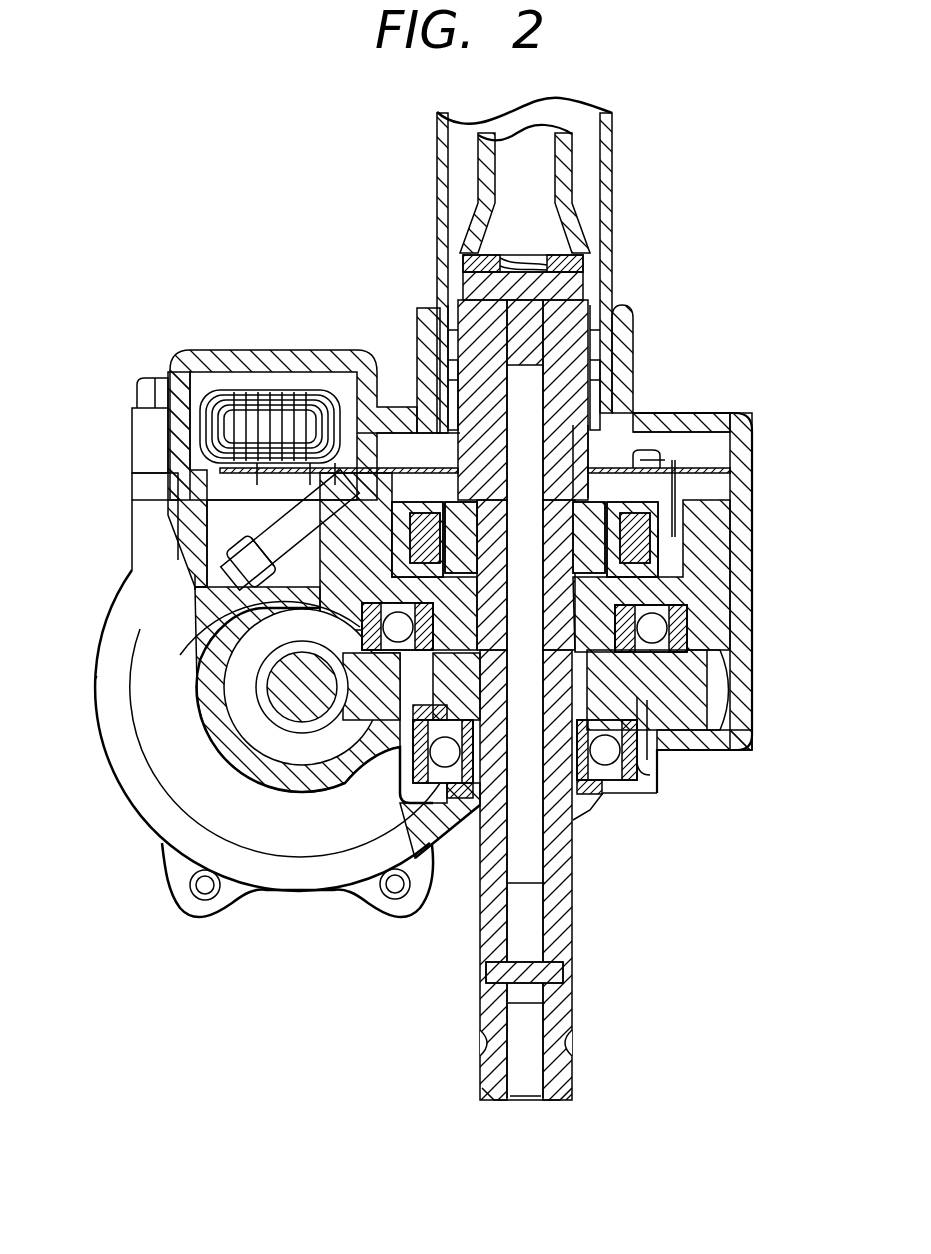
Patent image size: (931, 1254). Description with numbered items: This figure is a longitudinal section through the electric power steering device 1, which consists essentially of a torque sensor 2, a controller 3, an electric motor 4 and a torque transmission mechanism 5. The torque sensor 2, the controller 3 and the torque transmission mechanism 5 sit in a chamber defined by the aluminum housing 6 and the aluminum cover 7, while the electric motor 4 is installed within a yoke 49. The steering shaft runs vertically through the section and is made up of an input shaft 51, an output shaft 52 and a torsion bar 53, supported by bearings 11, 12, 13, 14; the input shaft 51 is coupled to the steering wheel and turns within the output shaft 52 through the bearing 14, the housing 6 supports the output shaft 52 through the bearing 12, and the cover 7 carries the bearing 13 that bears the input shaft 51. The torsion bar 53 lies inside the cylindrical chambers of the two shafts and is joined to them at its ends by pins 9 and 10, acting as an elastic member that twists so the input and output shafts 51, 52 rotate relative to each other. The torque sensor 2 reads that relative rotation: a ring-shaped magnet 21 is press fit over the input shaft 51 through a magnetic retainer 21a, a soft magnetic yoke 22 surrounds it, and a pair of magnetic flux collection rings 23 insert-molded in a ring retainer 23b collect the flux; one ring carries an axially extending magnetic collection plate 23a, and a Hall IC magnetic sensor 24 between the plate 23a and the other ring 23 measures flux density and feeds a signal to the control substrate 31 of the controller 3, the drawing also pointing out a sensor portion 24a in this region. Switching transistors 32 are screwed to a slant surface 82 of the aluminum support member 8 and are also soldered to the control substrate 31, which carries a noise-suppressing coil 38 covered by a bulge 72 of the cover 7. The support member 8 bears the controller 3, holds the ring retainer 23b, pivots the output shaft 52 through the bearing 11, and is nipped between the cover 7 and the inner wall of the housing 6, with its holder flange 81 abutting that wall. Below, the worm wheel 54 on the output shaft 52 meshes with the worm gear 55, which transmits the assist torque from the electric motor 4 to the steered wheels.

The electric power steering device 1 is at (691, 985).
The torque sensor 2 is at (667, 550).
The controller 3 is at (710, 458).
The electric motor 4 is at (140, 833).
The torque transmission mechanism 5 is at (753, 747).
The housing 6 is at (183, 527).
The cover 7 is at (137, 385).
The support member 8 is at (235, 488).
The pin 9 is at (437, 290).
The pin 10 is at (510, 975).
The bearing 11 is at (240, 640).
The bearing 12 is at (657, 783).
The bearing 13 is at (617, 350).
The bearing 14 is at (637, 717).
The magnet 21 is at (627, 520).
The magnetic retainer 21a is at (600, 505).
The magnetic yoke 22 is at (645, 525).
The magnetic flux collection rings 23 is at (410, 505).
The magnetic collection plate 23a is at (640, 560).
The ring retainer 23b is at (400, 400).
The magnetic sensor 24 is at (662, 533).
The holder flange 24a is at (680, 493).
The control substrate 31 is at (725, 440).
The switching transistors 32 is at (287, 513).
The coil 38 is at (226, 392).
The yoke 49 is at (187, 847).
The input shaft 51 is at (425, 322).
The output shaft 52 is at (563, 937).
The torsion bar 53 is at (530, 857).
The worm wheel 54 is at (690, 675).
The worm gear 55 is at (310, 700).
The bulge 72 is at (262, 362).
The holder flange 81 is at (187, 572).
The slant surface 82 is at (187, 557).